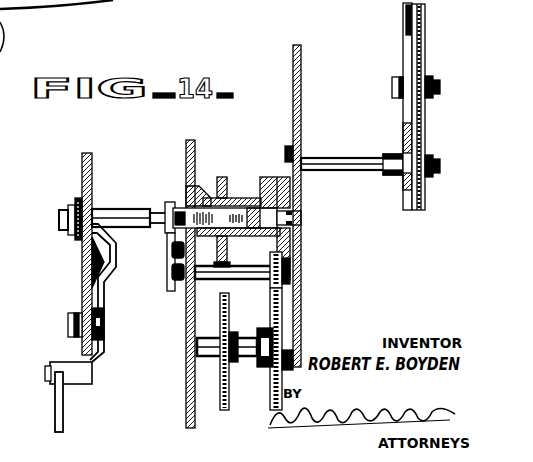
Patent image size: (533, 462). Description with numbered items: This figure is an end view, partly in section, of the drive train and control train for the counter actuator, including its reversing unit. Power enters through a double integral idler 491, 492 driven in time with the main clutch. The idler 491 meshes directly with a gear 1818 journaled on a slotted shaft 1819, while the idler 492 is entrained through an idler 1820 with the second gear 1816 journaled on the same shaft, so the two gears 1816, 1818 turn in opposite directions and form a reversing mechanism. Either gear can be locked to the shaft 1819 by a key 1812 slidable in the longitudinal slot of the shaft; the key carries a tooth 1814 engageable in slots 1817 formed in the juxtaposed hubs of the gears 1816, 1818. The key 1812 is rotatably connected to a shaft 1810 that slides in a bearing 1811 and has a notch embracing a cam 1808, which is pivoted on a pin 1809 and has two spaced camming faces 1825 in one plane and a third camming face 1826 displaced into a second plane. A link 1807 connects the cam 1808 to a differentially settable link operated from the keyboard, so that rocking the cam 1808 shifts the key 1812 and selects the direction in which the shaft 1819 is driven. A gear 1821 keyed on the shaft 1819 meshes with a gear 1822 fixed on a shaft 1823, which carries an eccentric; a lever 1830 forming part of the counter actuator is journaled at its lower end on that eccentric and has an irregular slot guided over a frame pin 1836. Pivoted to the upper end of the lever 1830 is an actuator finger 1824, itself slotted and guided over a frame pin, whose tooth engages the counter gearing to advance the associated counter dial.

The link 1807 is at (55, 413).
The cam 1808 is at (103, 257).
The pin 1809 is at (68, 327).
The shaft 1810 is at (155, 208).
The bearing 1811 is at (70, 207).
The key 1812 is at (199, 207).
The tooth 1814 is at (238, 203).
The gear 1816 is at (190, 292).
The slots 1817 is at (277, 201).
The gear 1818 is at (301, 246).
The slotted shaft 1819 is at (294, 216).
The idler 1820 is at (300, 286).
The gear 1821 is at (299, 230).
The gear 1822 is at (288, 146).
The shaft 1823 is at (330, 157).
The actuator finger 1824 is at (408, 3).
The camming faces 1825 is at (88, 287).
The camming face 1826 is at (117, 256).
The lever 1830 is at (413, 48).
The frame pin 1836 is at (392, 90).
The idler 491 is at (221, 388).
The idler 492 is at (301, 308).